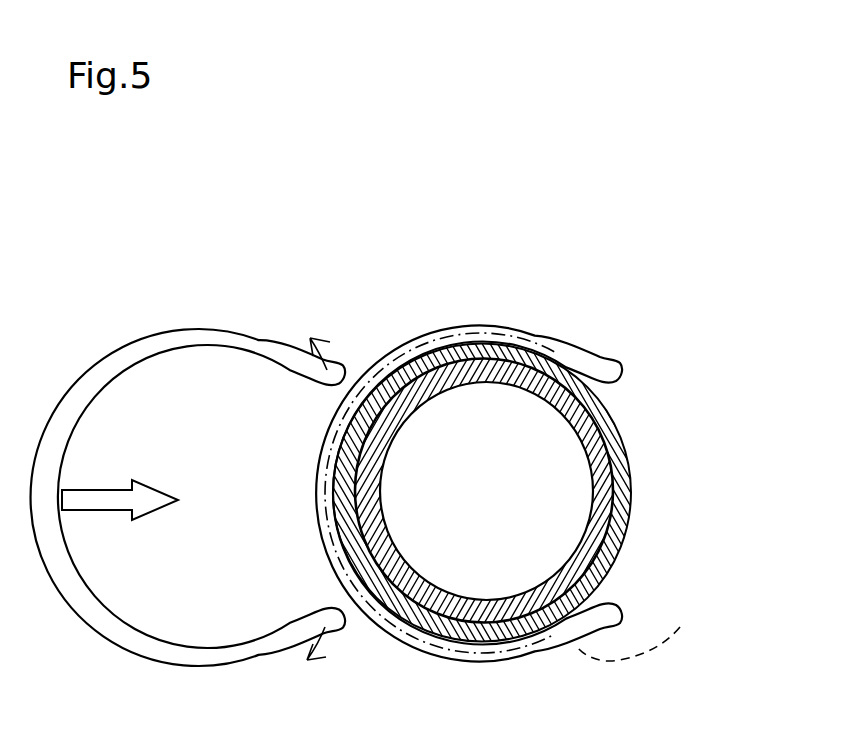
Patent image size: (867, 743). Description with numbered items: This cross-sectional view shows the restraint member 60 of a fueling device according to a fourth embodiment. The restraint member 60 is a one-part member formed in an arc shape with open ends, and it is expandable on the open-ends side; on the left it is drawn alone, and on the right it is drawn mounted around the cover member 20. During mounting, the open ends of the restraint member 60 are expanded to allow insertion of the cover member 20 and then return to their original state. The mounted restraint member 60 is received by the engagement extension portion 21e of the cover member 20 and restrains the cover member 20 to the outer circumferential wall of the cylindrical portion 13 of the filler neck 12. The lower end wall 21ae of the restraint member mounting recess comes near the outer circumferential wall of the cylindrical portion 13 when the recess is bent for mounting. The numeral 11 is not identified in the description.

The restraint member 60 is at (253, 340).
The piping assembly 11 is at (672, 350).
The cover member 20 is at (544, 492).
The engagement extension portion 21e is at (630, 437).
The filler neck 12 is at (486, 491).
The cylindrical portion 13 is at (583, 412).
The lower end wall 21ae is at (632, 553).